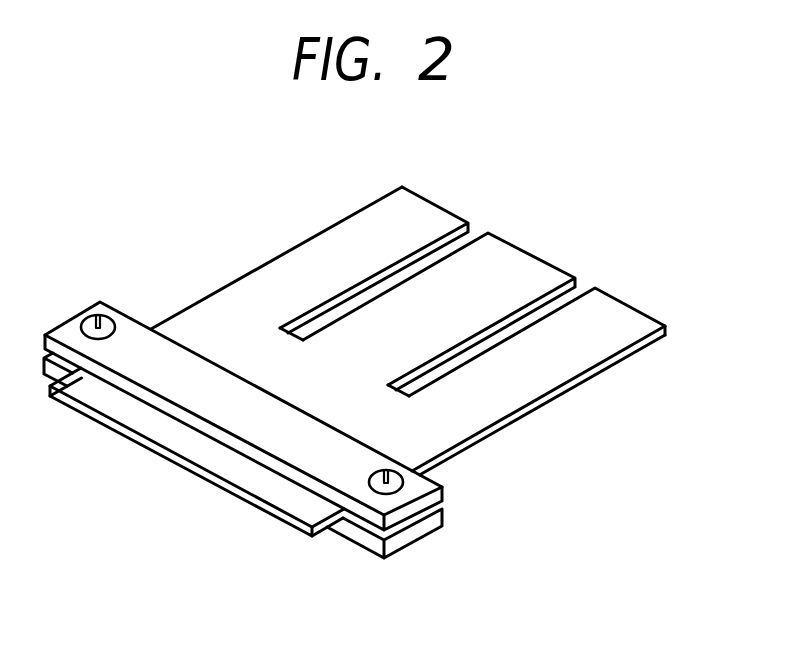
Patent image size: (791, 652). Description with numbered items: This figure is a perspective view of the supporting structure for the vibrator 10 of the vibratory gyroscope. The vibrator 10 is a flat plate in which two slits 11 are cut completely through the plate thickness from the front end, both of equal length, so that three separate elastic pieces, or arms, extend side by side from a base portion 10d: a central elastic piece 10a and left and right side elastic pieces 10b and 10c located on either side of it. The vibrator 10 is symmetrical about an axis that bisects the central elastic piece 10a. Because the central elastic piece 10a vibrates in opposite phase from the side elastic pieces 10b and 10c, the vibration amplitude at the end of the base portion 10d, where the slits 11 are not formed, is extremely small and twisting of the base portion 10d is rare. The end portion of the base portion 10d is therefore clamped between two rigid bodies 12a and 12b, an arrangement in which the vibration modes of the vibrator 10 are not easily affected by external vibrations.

The vibrator 10 is at (183, 471).
The central elastic piece 10a is at (522, 258).
The left side elastic piece 10b is at (395, 207).
The right side elastic piece 10c is at (590, 350).
The base portion 10d is at (335, 408).
The slits 11 is at (342, 310).
The rigid body 12a is at (420, 481).
The rigid body 12b is at (407, 538).